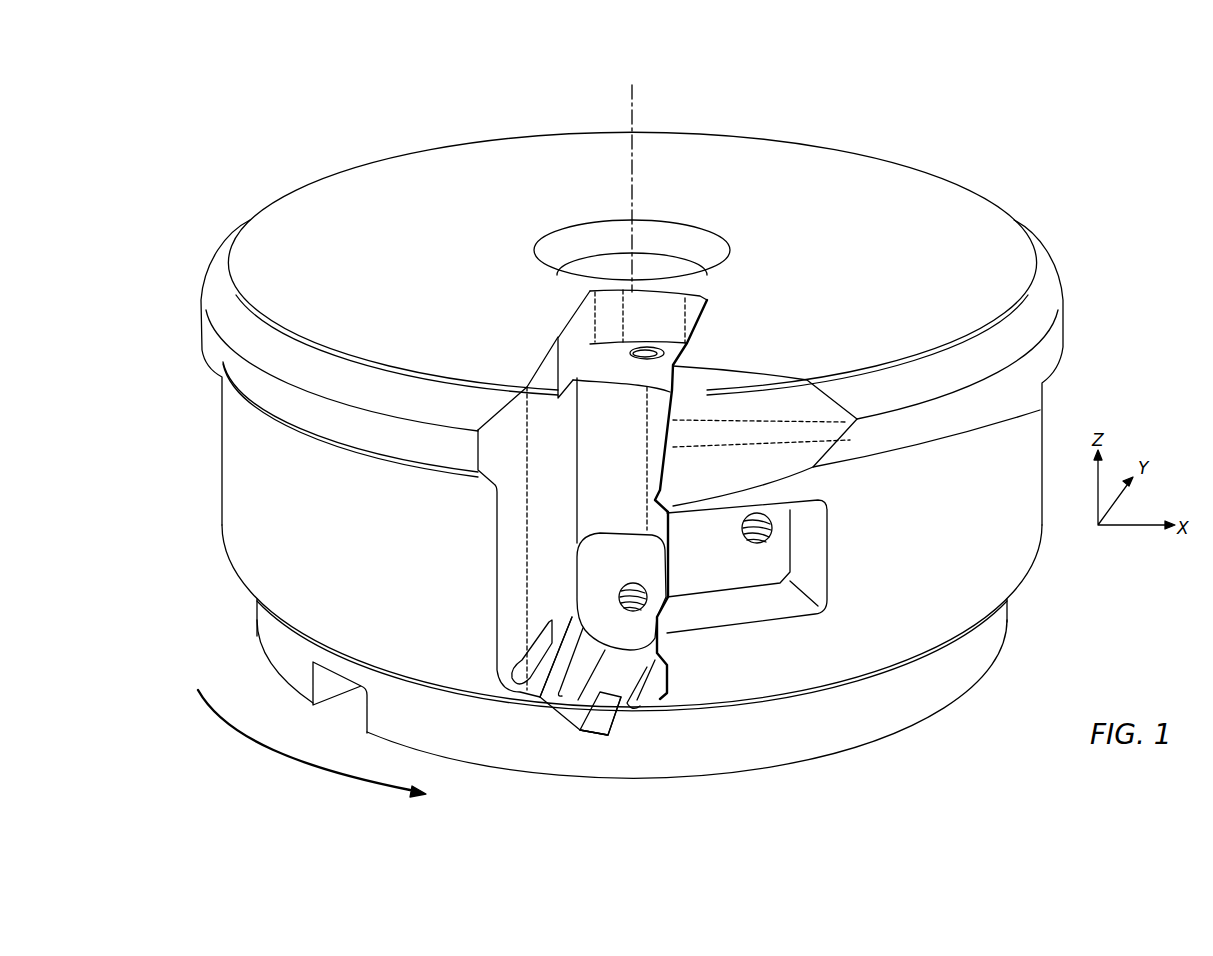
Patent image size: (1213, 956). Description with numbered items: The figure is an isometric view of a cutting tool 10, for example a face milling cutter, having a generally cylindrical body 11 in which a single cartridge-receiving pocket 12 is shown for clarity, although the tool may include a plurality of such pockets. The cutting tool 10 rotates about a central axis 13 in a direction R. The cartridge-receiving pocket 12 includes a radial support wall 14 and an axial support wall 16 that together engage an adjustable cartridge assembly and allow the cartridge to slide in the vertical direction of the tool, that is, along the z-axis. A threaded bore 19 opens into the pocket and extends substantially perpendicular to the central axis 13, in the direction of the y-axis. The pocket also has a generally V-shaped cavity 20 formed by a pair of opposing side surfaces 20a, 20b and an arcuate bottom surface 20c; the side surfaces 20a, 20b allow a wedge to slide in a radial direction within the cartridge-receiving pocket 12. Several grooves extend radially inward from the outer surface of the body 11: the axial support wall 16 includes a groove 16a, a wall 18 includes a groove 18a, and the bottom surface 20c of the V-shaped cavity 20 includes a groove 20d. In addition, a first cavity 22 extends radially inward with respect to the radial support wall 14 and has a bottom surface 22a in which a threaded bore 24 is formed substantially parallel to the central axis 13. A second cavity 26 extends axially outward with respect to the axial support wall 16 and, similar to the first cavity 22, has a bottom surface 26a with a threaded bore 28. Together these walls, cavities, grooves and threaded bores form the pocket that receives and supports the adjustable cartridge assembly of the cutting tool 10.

The cutting tool 10 is at (163, 117).
The body 11 is at (220, 455).
The cartridge-receiving pocket 12 is at (599, 515).
The central axis 13 is at (633, 127).
The radial support wall 14 is at (663, 407).
The axial support wall 16 is at (548, 440).
The groove 16a is at (530, 658).
The wall 18 is at (670, 432).
The groove 18a is at (658, 685).
The threaded bore 19 is at (619, 598).
The V-shaped cavity 20 is at (597, 722).
The side surface 20a is at (560, 690).
The side surface 20b is at (632, 699).
The arcuate bottom surface 20c is at (598, 714).
The groove 20d is at (605, 722).
The first cavity 22 is at (613, 353).
The bottom surface 22a is at (591, 368).
The threaded bore 24 is at (653, 352).
The second cavity 26 is at (750, 590).
The bottom surface 26a is at (697, 575).
The threaded bore 28 is at (772, 537).
The direction of rotation R is at (258, 742).